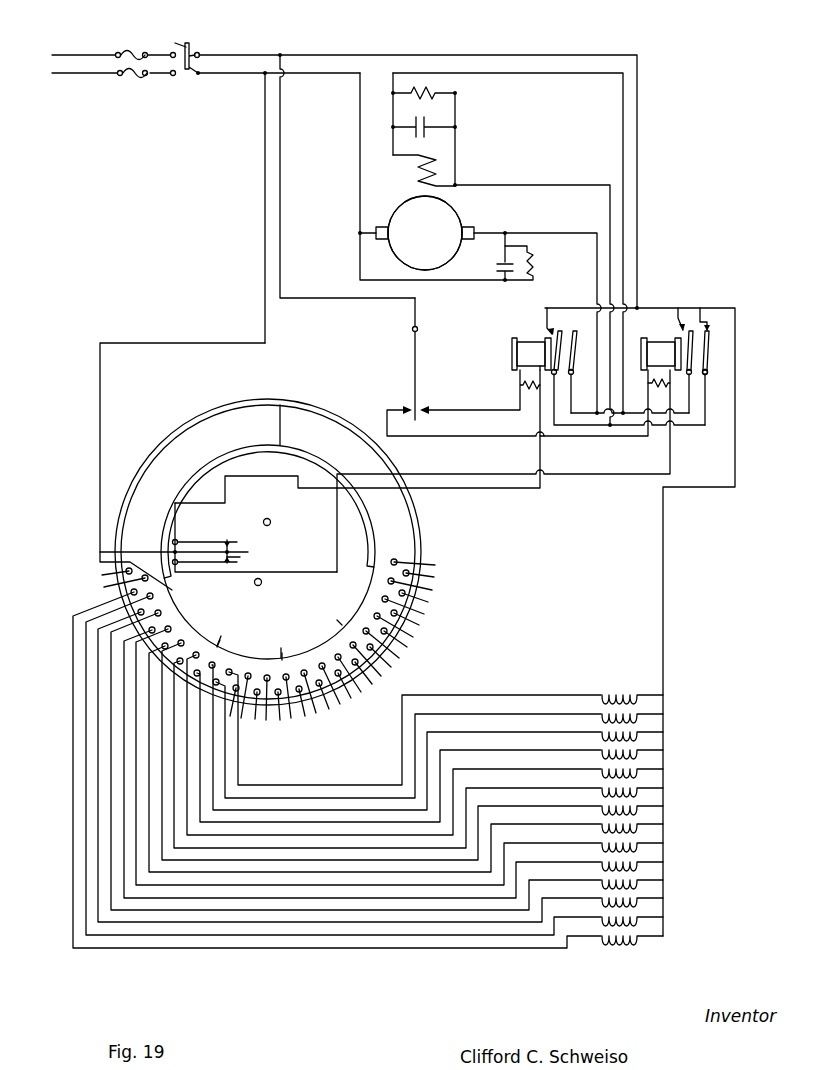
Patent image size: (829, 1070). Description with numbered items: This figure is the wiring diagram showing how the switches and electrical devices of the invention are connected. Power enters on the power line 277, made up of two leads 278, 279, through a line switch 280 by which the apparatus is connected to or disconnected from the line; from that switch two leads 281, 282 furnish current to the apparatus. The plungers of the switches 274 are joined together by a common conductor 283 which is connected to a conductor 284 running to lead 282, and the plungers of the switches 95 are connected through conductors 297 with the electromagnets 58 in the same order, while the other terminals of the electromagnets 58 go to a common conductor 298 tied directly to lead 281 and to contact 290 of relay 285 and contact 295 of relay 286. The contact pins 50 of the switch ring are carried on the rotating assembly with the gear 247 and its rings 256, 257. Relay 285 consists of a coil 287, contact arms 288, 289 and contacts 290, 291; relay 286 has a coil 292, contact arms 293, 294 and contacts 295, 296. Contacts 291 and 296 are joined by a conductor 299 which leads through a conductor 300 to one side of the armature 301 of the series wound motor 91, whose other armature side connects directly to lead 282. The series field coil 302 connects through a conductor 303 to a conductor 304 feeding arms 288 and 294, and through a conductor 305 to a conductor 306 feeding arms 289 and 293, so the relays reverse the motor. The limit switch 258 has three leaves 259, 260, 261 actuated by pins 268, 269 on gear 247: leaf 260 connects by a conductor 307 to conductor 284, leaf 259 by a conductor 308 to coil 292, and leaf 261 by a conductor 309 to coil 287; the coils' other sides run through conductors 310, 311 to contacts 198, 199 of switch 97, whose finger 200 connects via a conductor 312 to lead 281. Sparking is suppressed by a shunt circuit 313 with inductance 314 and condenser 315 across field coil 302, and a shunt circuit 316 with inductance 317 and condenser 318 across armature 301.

The contact pins 50 is at (140, 580).
The electromagnets 58 is at (636, 733).
The motor 91 is at (402, 197).
The switches 95 is at (322, 680).
The switch 97 is at (423, 400).
The contact 198 is at (407, 408).
The contact 199 is at (428, 404).
The finger 200 is at (414, 368).
The gear 247 is at (221, 403).
The outer ring 256 is at (161, 450).
The ring 257 is at (314, 428).
The limit switch 258 is at (209, 545).
The switch leaf 259 is at (247, 536).
The switch leaf 260 is at (228, 564).
The switch leaf 261 is at (232, 557).
The pin 268 is at (271, 522).
The pin 269 is at (262, 582).
The switches 274 is at (242, 642).
The power line 277 is at (73, 75).
The lead 278 is at (90, 55).
The lead 279 is at (105, 76).
The line switch 280 is at (193, 52).
The lead 281 is at (330, 55).
The lead 282 is at (300, 82).
The common conductor 283 is at (197, 618).
The conductor 284 is at (100, 386).
The relay 285 is at (532, 340).
The relay 286 is at (681, 310).
The coil 287 is at (518, 354).
The contact arm 288 is at (558, 350).
The contact arm 289 is at (576, 338).
The contact 290 is at (548, 307).
The contact 291 is at (570, 328).
The coil 292 is at (651, 344).
The contact arm 293 is at (704, 365).
The contact arm 294 is at (711, 348).
The contact 295 is at (691, 332).
The contact 296 is at (710, 323).
The conductors 297 is at (292, 948).
The common conductor 298 is at (666, 604).
The conductor 299 is at (648, 338).
The conductor 300 is at (554, 233).
The armature 301 is at (445, 222).
The field coil 302 is at (440, 172).
The conductor 303 is at (530, 184).
The conductor 304 is at (582, 438).
The conductor 305 is at (622, 102).
The conductor 306 is at (690, 404).
The conductor 307 is at (140, 551).
The conductor 308 is at (445, 490).
The conductor 309 is at (506, 476).
The conductor 310 is at (482, 407).
The conductor 311 is at (441, 438).
The conductor 312 is at (283, 243).
The shunt circuit 313 is at (458, 102).
The inductance 314 is at (425, 88).
The condenser 315 is at (435, 126).
The shunt circuit 316 is at (360, 263).
The inductance 317 is at (533, 268).
The condenser 318 is at (497, 270).